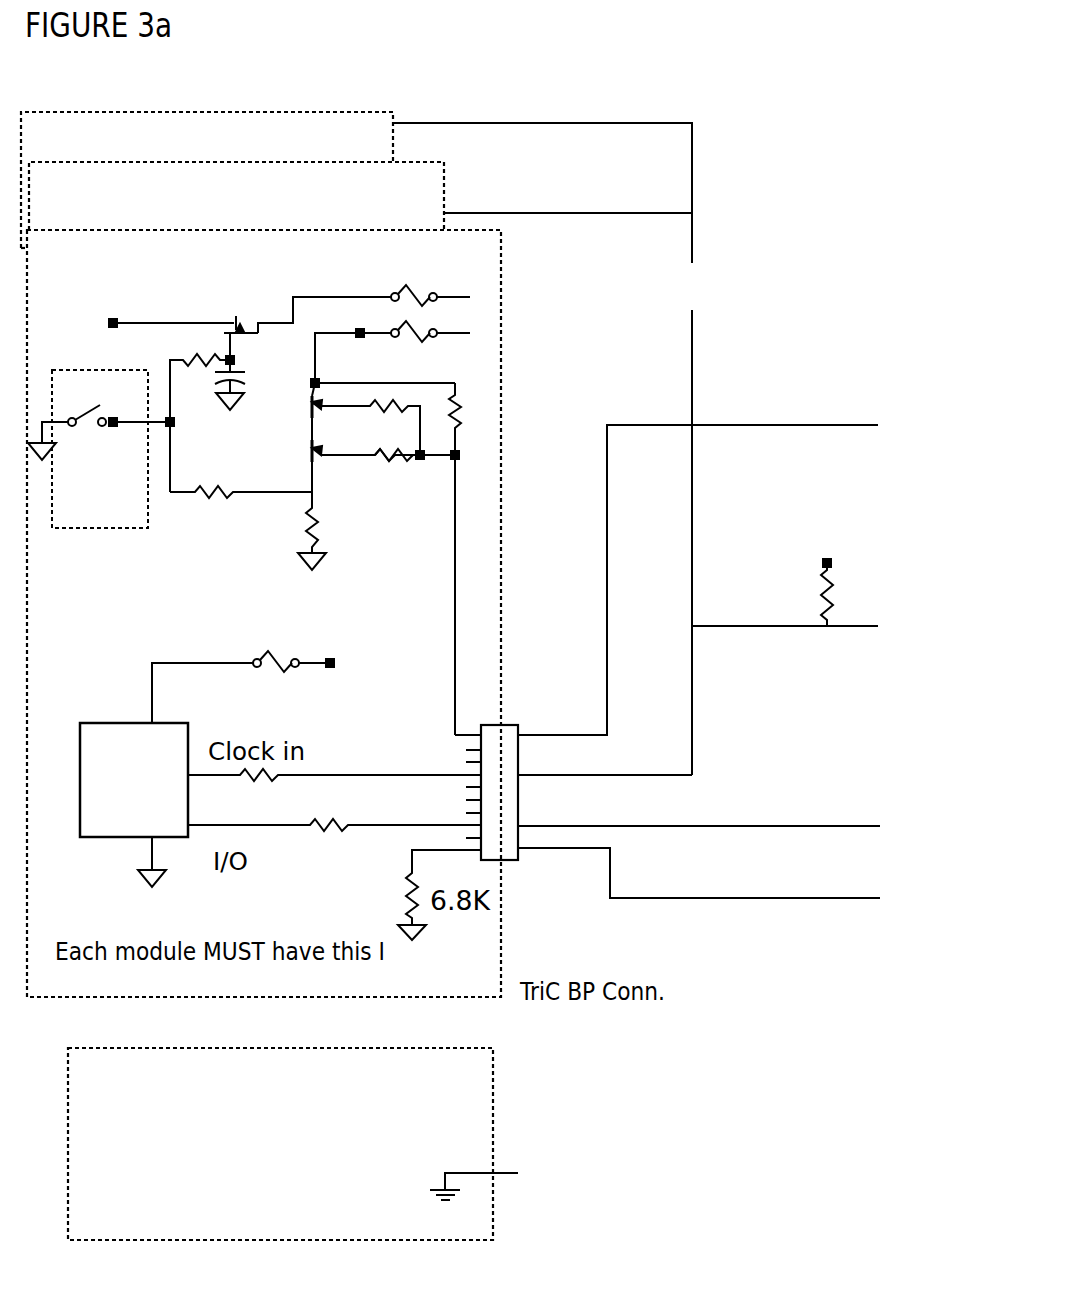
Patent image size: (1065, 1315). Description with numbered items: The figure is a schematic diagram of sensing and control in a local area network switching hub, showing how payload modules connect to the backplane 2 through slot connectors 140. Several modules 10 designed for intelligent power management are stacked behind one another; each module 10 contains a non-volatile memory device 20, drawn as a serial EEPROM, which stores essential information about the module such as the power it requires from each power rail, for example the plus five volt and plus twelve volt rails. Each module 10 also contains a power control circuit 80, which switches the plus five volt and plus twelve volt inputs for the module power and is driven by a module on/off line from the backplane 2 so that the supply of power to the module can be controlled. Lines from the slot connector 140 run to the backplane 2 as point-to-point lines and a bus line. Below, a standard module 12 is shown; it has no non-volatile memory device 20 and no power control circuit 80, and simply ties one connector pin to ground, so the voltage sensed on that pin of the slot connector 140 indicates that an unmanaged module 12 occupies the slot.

The module 10 is at (355, 122).
The backplane 2 is at (836, 392).
The power control circuit 80 is at (457, 443).
The non-volatile memory device 20 is at (110, 738).
The slot connector 140 is at (505, 725).
The module 12 is at (482, 1112).